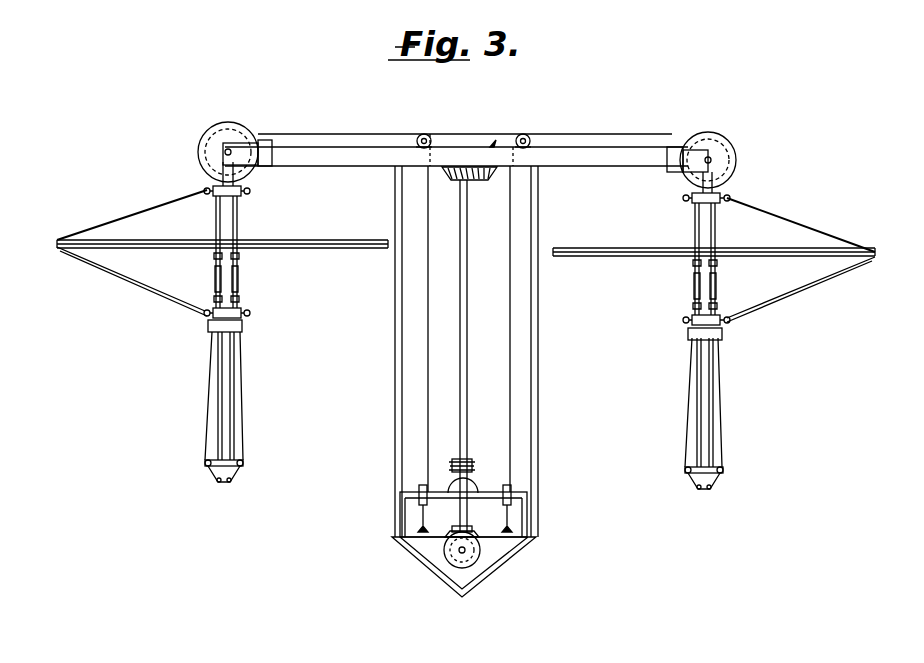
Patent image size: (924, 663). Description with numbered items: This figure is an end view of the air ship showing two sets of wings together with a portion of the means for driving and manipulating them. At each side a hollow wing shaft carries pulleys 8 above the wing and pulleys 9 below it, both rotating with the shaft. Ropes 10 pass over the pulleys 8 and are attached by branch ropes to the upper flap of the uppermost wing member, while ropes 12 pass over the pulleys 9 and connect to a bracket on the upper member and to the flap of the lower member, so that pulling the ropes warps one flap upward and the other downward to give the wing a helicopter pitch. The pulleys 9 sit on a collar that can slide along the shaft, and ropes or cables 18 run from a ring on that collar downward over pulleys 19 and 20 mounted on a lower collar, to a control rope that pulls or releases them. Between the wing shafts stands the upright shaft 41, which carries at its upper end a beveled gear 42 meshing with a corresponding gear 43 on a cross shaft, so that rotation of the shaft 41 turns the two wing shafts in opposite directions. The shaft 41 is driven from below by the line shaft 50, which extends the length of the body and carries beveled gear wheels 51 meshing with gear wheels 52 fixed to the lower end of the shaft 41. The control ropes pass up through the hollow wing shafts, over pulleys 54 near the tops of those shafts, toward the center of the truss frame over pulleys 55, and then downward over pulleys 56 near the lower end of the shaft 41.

The pulleys 8 is at (206, 194).
The pulleys 9 is at (288, 358).
The ropes 10 is at (240, 216).
The ropes 12 is at (170, 293).
The ropes or cables 18 is at (245, 414).
The pulleys 19 is at (246, 462).
The pulleys 20 is at (464, 492).
The upright shaft 41 is at (458, 370).
The beveled gear 42 is at (488, 180).
The gear 43 is at (494, 145).
The line shaft 50 is at (461, 553).
The beveled gear wheels 51 is at (448, 562).
The gear wheels 52 is at (473, 537).
The pulleys 54 is at (247, 128).
The pulleys 55 is at (428, 134).
The pulleys 56 is at (417, 486).